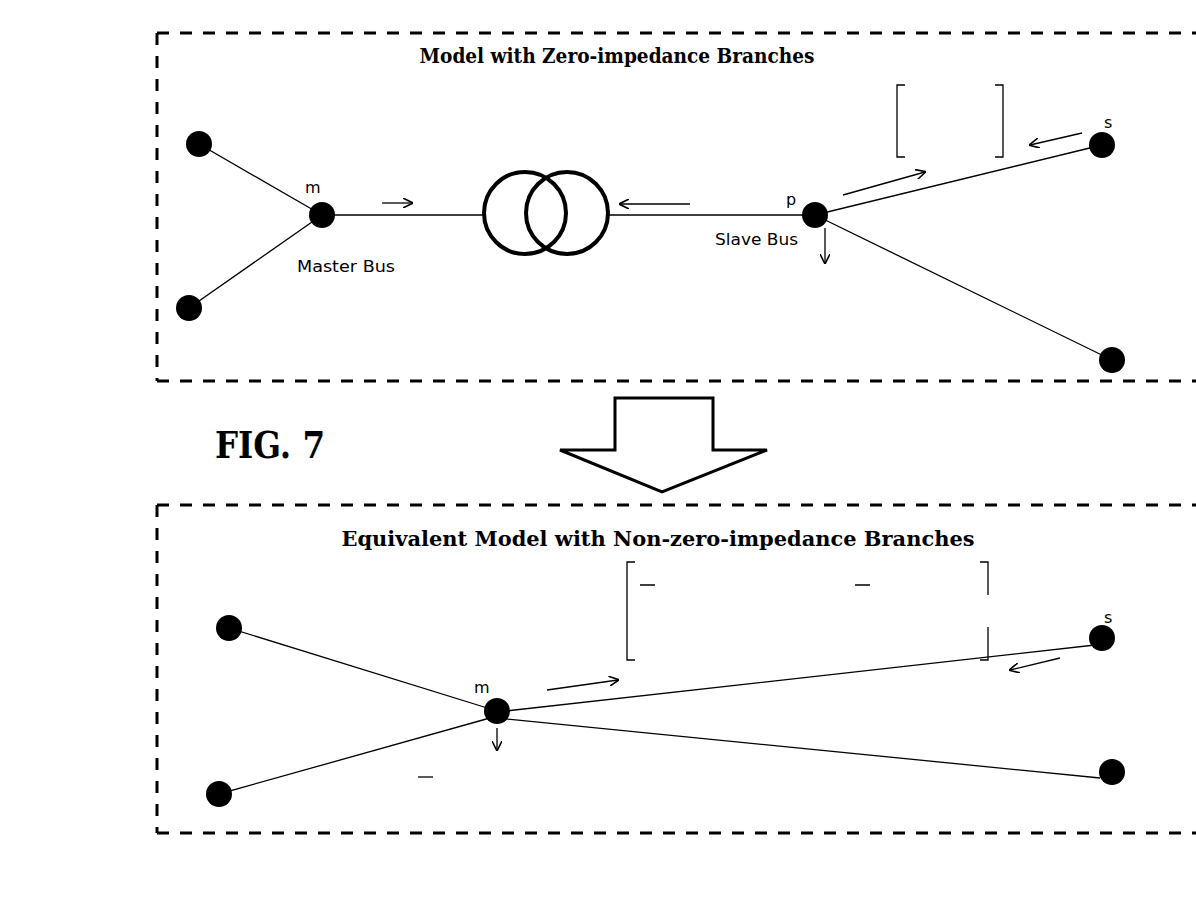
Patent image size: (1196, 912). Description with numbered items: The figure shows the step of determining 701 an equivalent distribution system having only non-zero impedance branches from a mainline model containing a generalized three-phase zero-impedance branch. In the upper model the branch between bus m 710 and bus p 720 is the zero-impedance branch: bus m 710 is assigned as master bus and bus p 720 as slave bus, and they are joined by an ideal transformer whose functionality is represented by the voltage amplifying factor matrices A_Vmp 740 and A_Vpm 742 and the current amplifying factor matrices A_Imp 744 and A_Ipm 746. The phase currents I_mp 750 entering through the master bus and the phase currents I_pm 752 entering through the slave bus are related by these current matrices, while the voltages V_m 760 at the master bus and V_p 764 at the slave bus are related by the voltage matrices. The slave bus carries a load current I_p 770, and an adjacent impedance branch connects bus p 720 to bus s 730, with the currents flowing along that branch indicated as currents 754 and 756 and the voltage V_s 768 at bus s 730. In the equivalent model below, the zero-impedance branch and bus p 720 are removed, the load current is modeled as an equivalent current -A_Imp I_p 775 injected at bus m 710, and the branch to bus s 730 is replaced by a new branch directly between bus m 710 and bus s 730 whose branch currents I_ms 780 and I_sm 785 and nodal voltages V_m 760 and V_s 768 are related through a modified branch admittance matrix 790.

The determining an equivalent distribution system 701 is at (663, 445).
The bus m 710 is at (330, 200).
The bus p 720 is at (812, 203).
The bus s 730 is at (1123, 145).
The voltage amplifying factor matrix A_Vmp 740 is at (503, 278).
The voltage amplifying factor matrix A_Vpm 742 is at (577, 298).
The current amplifying factor matrix A_Imp 744 is at (493, 150).
The current amplifying factor matrix A_Ipm 746 is at (563, 147).
The phase currents I_mp entering through the master bus 750 is at (398, 165).
The phase currents I_pm entering through the slave bus 752 is at (670, 167).
The current I_ps 754 is at (877, 167).
The current I_sp 756 is at (1057, 98).
The phase-to-ground voltages V_m 760 is at (267, 220).
The phase-to-ground voltages V_p 764 is at (873, 224).
The nodal voltages V_s 768 is at (1120, 177).
The load current I_p 770 is at (840, 280).
The equivalent current -A_Imp I_p 775 is at (527, 753).
The branch current I_ms 780 is at (573, 647).
The branch current I_sm 785 is at (1065, 617).
The equivalent admittance matrix 790 is at (698, 585).